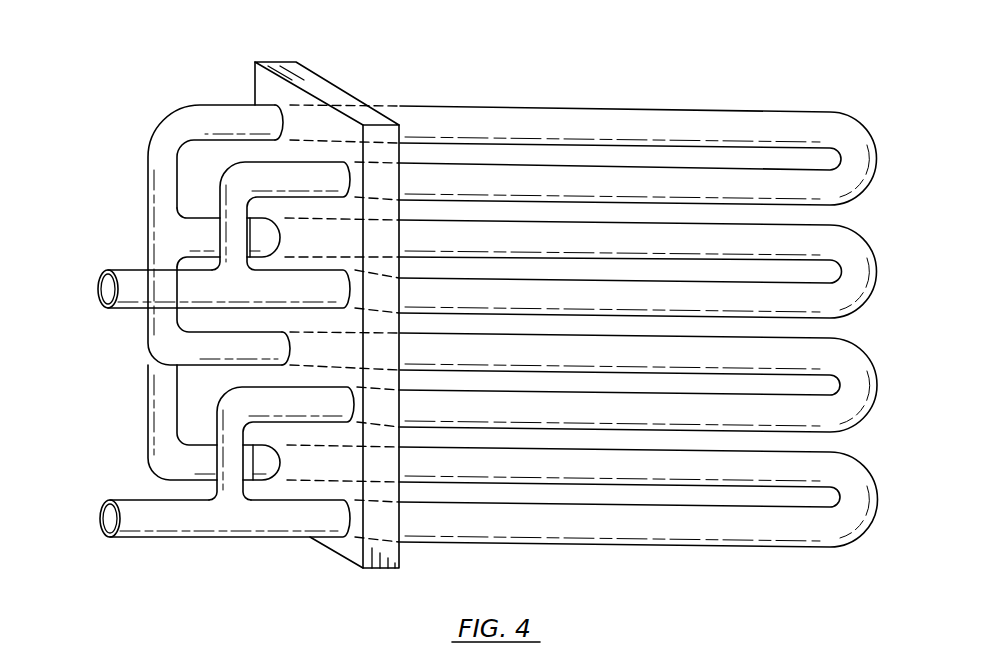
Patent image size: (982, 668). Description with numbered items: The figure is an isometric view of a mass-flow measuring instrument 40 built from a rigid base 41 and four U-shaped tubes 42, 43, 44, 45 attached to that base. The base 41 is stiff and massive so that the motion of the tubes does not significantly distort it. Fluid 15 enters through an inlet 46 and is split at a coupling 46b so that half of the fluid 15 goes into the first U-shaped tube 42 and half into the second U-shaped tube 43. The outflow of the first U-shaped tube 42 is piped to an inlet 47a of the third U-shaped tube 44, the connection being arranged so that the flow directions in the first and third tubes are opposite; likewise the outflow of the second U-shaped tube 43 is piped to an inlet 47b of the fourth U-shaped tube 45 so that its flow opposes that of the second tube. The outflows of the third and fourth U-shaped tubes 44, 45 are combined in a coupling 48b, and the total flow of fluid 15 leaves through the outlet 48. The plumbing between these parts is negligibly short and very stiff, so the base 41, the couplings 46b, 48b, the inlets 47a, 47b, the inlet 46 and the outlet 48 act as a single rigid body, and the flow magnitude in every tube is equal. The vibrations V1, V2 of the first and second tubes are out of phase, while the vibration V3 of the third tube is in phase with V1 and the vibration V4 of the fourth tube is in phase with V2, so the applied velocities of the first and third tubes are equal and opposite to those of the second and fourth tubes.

The fluid 15 is at (92, 290).
The mass-flow measuring instrument 40 is at (213, 78).
The rigid base 41 is at (335, 102).
The first U-shaped tube 42 is at (810, 122).
The second U-shaped tube 43 is at (848, 242).
The third U-shaped tube 44 is at (855, 367).
The fourth U-shaped tube 45 is at (853, 473).
The inlet 46 is at (132, 280).
The coupling 46b is at (263, 288).
The inlet of the third U-shaped tube 47a is at (153, 158).
The inlet of the fourth U-shaped tube 47b is at (152, 406).
The outlet 48 is at (137, 508).
The coupling 48b is at (237, 513).
The vibration of the first tube V1 is at (880, 155).
The vibration of the second tube V2 is at (880, 265).
The vibration of the third tube V3 is at (880, 377).
The vibration of the fourth tube V4 is at (880, 507).